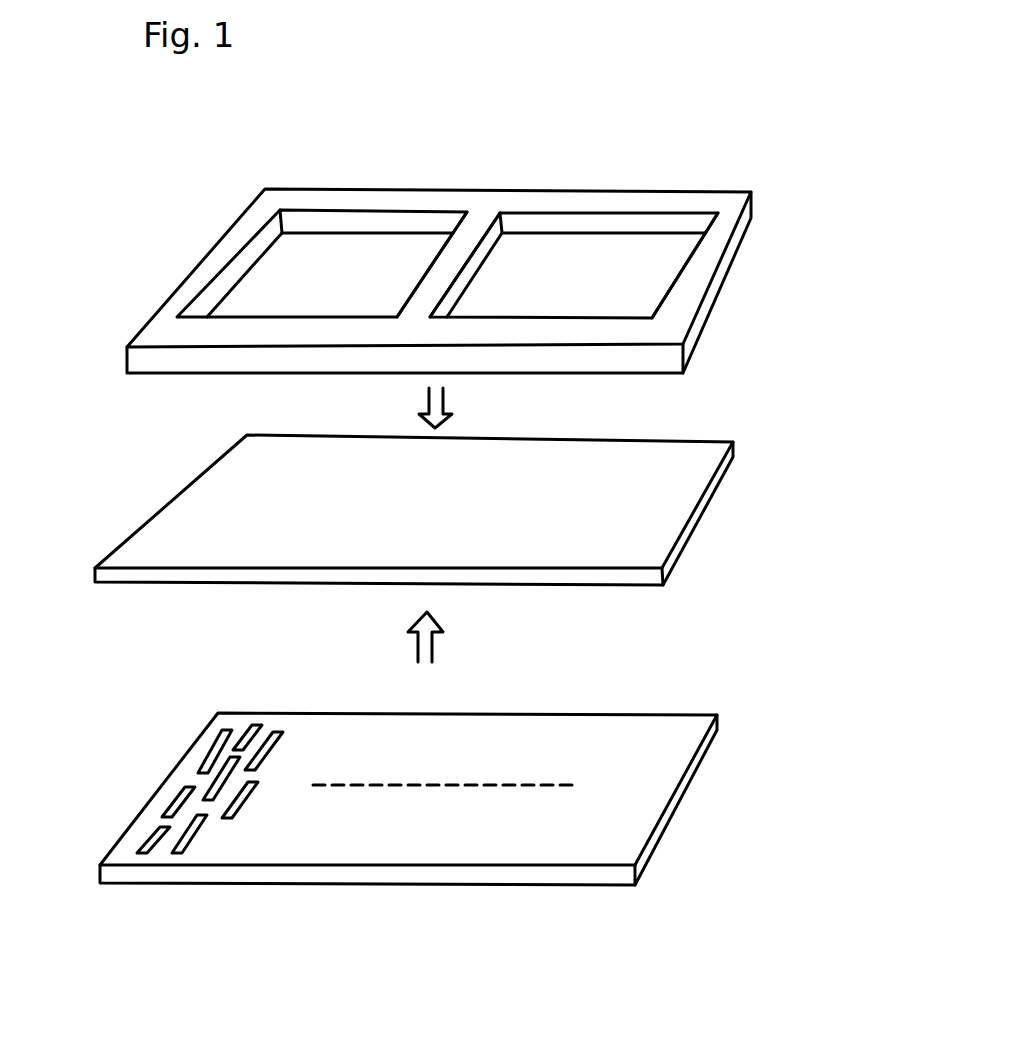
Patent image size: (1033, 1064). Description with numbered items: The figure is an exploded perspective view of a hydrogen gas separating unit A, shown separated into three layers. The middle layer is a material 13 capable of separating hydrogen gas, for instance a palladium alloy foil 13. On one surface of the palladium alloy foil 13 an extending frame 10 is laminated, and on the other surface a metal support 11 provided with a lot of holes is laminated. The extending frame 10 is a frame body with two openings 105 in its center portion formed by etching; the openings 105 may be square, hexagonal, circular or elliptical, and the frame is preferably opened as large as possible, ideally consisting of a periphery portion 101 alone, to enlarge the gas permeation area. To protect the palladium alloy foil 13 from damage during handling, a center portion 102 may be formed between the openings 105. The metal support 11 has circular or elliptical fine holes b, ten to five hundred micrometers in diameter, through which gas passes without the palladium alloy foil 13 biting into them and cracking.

The hydrogen gas separating unit A is at (703, 140).
The extending frame 10 is at (745, 222).
The periphery portion 101 is at (697, 278).
The center portion 102 is at (460, 250).
The openings 105 is at (348, 258).
The palladium alloy foil 13 is at (710, 487).
The metal support 11 is at (707, 753).
The fine holes b is at (153, 837).